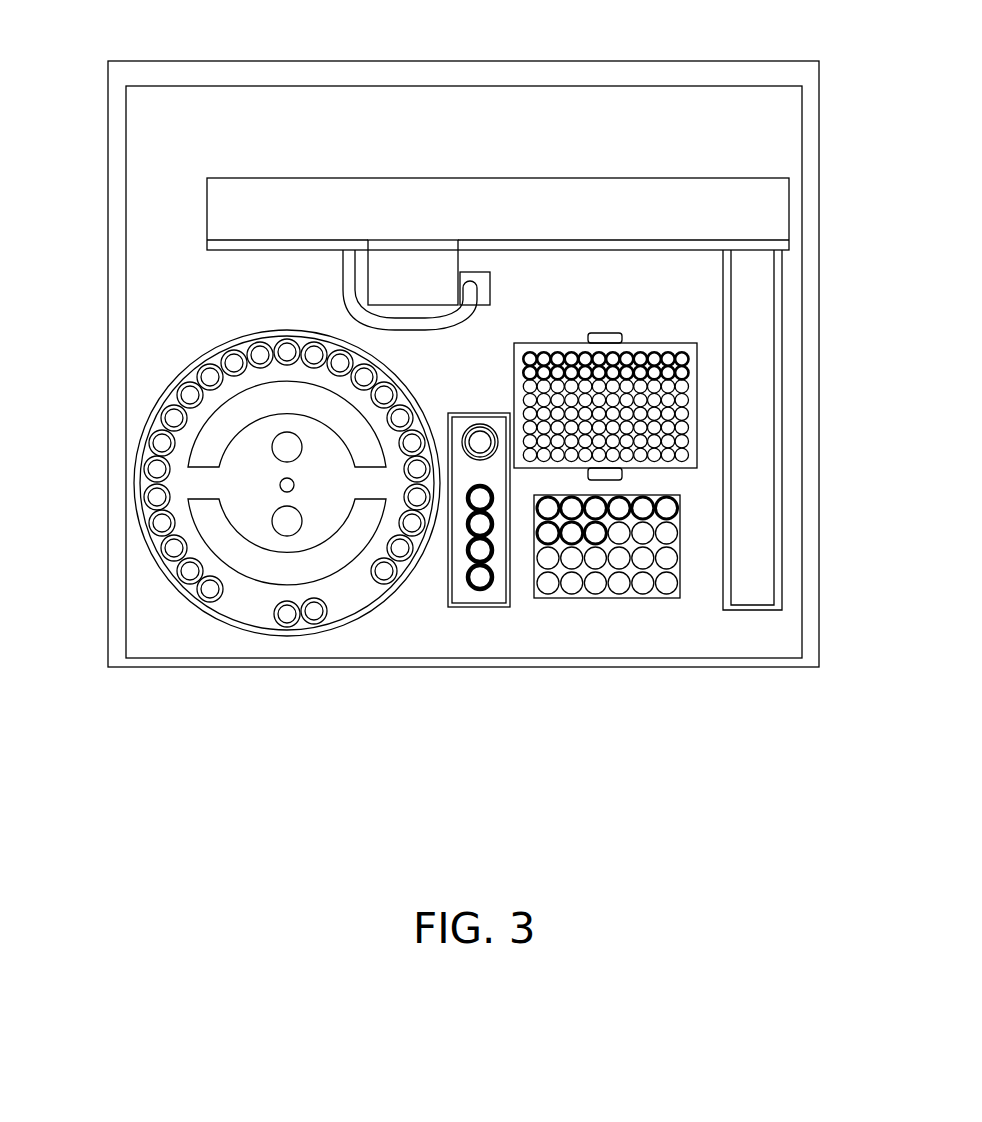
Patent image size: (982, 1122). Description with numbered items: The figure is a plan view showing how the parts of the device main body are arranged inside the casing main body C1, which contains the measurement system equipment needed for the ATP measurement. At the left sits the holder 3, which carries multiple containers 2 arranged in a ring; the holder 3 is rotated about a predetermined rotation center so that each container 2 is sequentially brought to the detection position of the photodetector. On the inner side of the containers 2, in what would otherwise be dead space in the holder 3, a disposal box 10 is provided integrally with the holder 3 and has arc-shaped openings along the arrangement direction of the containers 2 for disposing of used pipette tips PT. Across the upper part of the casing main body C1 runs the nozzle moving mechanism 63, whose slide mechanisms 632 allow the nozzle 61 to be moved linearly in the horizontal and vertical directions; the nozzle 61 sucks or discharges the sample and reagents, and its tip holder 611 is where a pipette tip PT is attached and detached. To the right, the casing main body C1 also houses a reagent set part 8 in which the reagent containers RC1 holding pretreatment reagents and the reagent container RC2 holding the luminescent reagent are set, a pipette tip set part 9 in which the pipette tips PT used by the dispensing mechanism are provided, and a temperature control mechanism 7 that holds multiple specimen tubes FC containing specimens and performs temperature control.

The casing main body C1 is at (453, 61).
The slide mechanisms 632 is at (426, 178).
The nozzle moving mechanism 63 is at (482, 221).
The nozzle 61 is at (479, 290).
The tip holder 611 is at (490, 285).
The pipette tip PT is at (665, 353).
The pipette tip set part 9 is at (689, 391).
The specimen tube FC is at (680, 508).
The temperature control mechanism 7 is at (700, 612).
The reagent set part 8 is at (477, 571).
The reagent containers RC1 is at (492, 582).
The reagent container RC2 is at (477, 460).
The container 2 is at (259, 529).
The holder 3 is at (250, 633).
The disposal box 10 is at (210, 443).